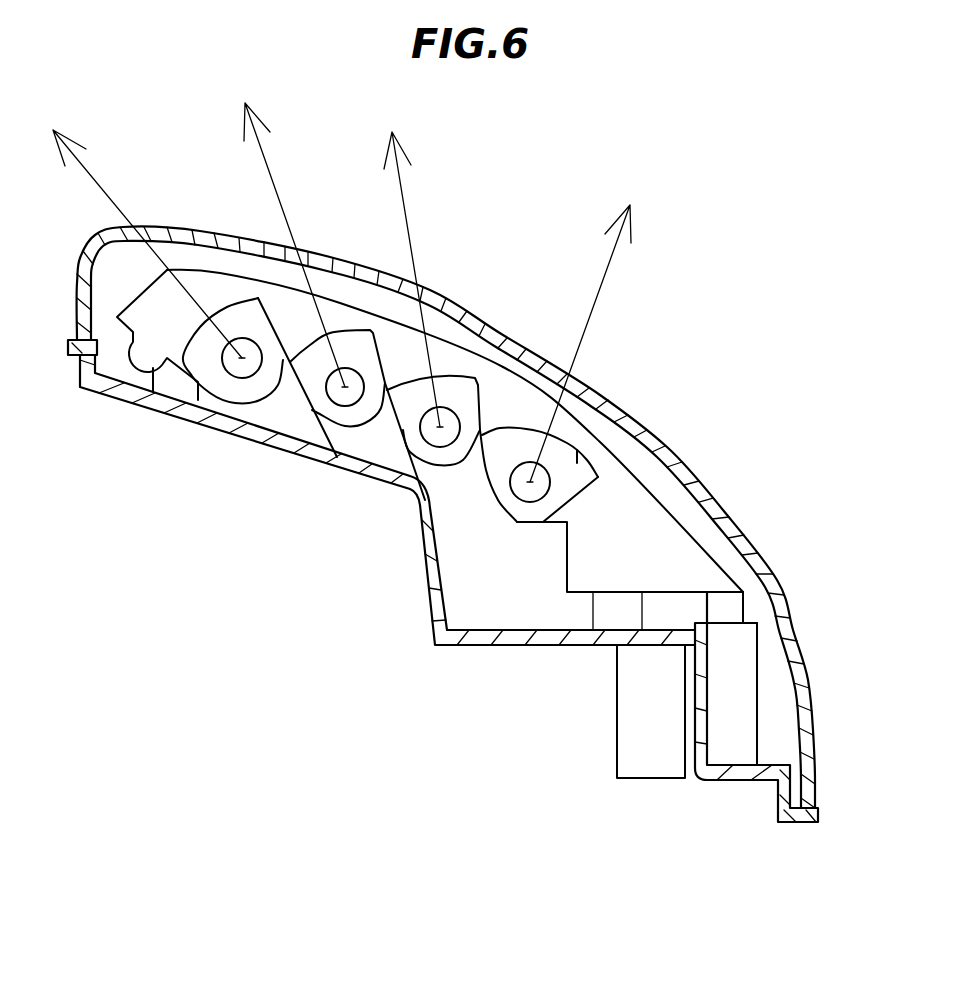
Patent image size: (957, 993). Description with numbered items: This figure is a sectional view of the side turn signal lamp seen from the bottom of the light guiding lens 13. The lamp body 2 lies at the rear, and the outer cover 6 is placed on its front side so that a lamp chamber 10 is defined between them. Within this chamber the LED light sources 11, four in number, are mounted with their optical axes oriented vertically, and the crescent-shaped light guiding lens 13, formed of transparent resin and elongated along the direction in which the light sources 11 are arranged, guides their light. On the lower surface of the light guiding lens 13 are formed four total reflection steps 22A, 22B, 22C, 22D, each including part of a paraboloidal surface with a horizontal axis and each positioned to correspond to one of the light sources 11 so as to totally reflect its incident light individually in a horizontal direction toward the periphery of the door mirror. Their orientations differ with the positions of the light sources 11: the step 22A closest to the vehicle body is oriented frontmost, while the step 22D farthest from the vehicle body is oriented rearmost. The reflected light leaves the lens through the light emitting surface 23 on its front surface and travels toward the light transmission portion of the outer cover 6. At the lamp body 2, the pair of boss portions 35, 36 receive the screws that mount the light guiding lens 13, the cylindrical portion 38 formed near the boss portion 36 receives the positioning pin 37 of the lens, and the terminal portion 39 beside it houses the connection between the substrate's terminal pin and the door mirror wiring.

The lamp body 2 is at (412, 528).
The outer cover 6 is at (723, 510).
The lamp chamber 10 is at (458, 577).
The LED light source 11 is at (226, 405).
The light guiding lens 13 is at (628, 485).
The total reflection step 22A is at (620, 408).
The total reflection step 22B is at (460, 383).
The total reflection step 22C is at (355, 337).
The total reflection step 22D is at (233, 322).
The light emitting surface 23 is at (503, 367).
The boss portion 35 is at (167, 390).
The boss portion 36 is at (613, 620).
The positioning pin 37 is at (737, 607).
The cylindrical portion 38 is at (733, 750).
The terminal portion 39 is at (628, 744).